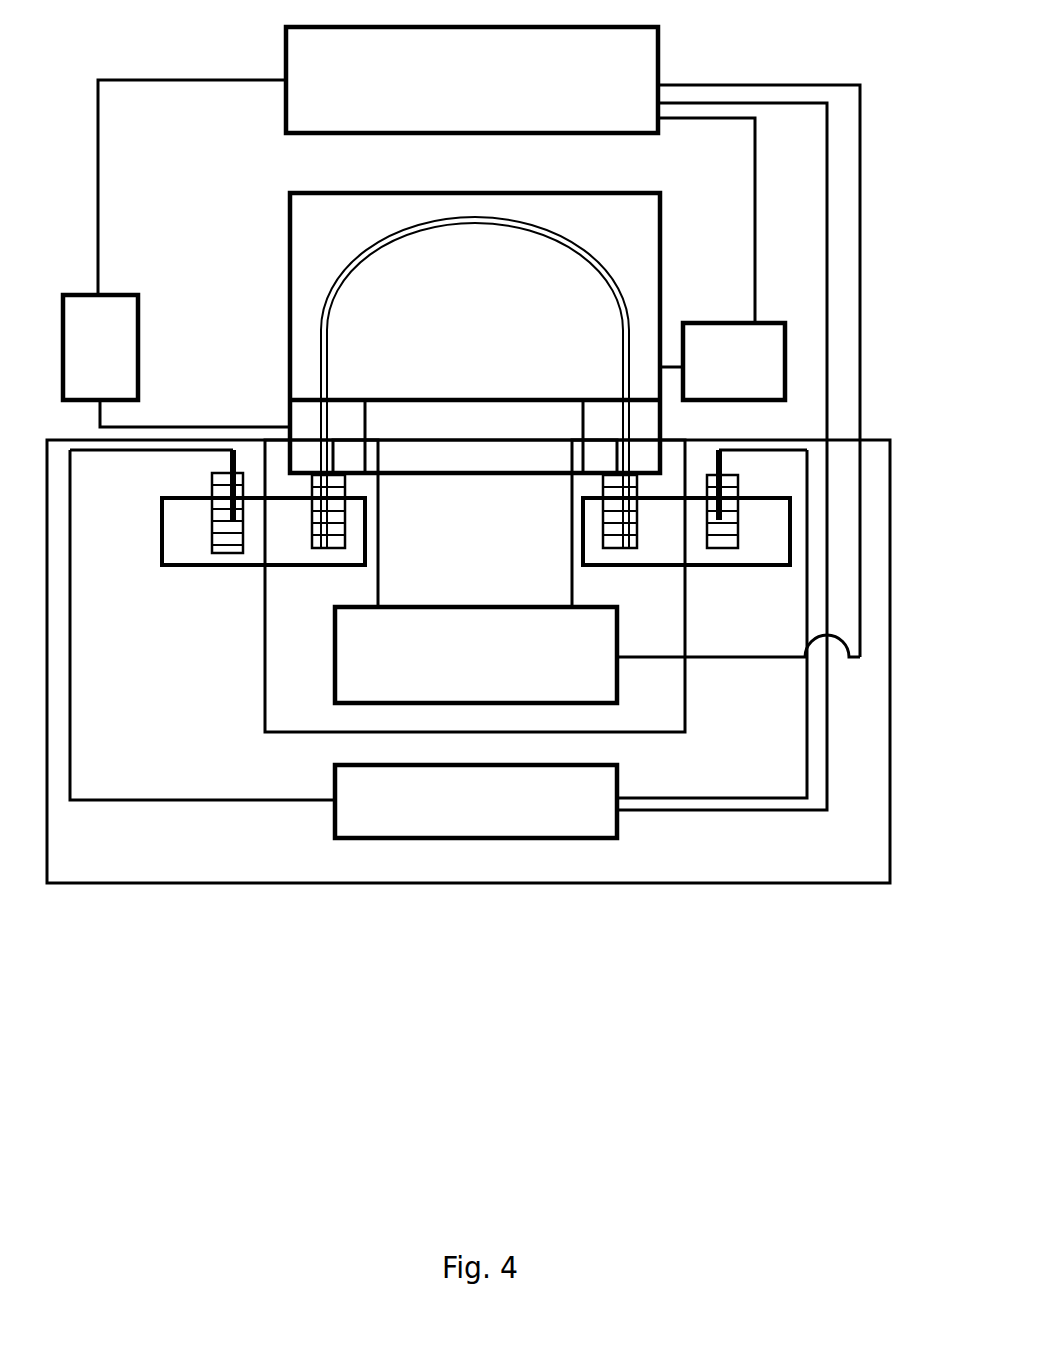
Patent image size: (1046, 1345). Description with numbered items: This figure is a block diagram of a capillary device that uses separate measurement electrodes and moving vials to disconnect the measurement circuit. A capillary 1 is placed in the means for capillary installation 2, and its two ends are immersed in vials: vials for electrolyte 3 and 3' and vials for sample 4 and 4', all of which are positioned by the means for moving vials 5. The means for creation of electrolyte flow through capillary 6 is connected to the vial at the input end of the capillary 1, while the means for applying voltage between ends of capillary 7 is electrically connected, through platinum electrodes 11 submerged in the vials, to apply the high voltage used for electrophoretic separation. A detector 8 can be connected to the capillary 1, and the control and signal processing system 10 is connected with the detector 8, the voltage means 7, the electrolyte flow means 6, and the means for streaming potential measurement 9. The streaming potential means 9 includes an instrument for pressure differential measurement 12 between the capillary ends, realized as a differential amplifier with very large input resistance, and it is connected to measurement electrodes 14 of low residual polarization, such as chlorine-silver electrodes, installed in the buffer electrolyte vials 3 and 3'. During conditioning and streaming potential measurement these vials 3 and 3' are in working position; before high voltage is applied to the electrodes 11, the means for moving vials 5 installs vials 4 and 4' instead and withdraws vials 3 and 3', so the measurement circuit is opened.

The capillary 1 is at (398, 236).
The means for capillary installation 2 is at (635, 237).
The vial for electrolyte 3 is at (214, 556).
The vial for electrolyte 3' is at (739, 557).
The vial for sample 4 is at (314, 557).
The vial for sample 4' is at (635, 557).
The means for moving vials 5 is at (180, 531).
The means for creation of electrolyte flow through capillary 6 is at (105, 325).
The means for applying voltage between ends of capillary 7 is at (417, 658).
The detector 8 is at (735, 362).
The means for streaming potential measurement 9 is at (468, 883).
The control and signal processing system 10 is at (635, 68).
The electrodes 11 is at (335, 450).
The instrument for pressure differential measurement 12 is at (590, 803).
The measurement electrodes 14 is at (232, 457).